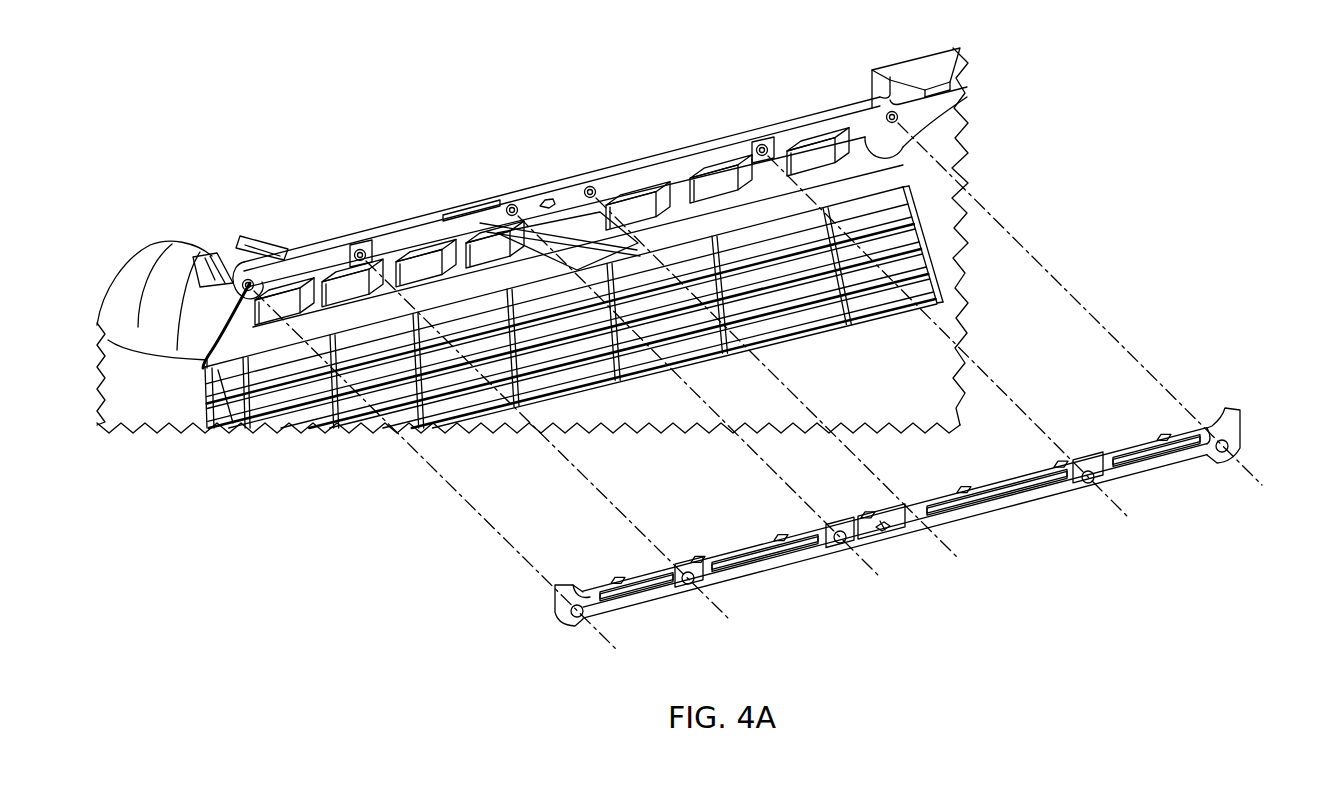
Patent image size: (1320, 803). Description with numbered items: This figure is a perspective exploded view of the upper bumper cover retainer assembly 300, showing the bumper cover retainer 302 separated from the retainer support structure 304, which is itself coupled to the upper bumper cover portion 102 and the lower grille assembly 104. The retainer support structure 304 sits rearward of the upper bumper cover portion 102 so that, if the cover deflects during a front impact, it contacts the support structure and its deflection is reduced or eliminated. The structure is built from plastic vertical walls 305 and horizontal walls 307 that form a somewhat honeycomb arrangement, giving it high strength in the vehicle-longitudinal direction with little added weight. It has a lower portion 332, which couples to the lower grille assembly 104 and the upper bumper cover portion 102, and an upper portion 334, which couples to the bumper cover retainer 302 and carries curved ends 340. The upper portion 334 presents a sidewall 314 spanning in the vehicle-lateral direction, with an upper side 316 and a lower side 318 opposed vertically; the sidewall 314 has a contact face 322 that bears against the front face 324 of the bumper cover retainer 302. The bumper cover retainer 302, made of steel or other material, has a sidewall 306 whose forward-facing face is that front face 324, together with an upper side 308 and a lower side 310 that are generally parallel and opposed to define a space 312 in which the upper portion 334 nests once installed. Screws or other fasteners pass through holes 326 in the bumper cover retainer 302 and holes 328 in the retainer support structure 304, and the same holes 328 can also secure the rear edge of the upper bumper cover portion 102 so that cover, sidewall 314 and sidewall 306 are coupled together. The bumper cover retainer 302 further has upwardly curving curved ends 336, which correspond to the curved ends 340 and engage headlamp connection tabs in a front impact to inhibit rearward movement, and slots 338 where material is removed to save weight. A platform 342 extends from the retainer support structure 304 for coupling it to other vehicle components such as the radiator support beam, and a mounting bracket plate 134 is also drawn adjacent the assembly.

The upper bumper cover portion 102 is at (168, 310).
The lower grille assembly 104 is at (920, 297).
The mounting bracket plate 134 is at (240, 255).
The upper bumper cover retainer assembly 300 is at (758, 386).
The bumper cover retainer 302 is at (1228, 407).
The retainer support structure 304 is at (878, 185).
The vertical walls 305 is at (462, 273).
The sidewall 306 is at (900, 530).
The horizontal walls 307 is at (808, 172).
The upper side 308 is at (597, 590).
The lower side 310 is at (727, 590).
The space 312 is at (895, 526).
The sidewall 314 is at (442, 227).
The upper side 316 is at (565, 182).
The lower side 318 is at (713, 185).
The contact face 322 is at (810, 133).
The front face 324 is at (992, 482).
The holes 326 is at (688, 584).
The holes 328 is at (250, 277).
The lower portion 332 is at (900, 115).
The upper portion 334 is at (562, 175).
The curved ends 336 is at (557, 597).
The slots 338 is at (975, 508).
The curved ends 340 is at (895, 106).
The platform 342 is at (578, 232).